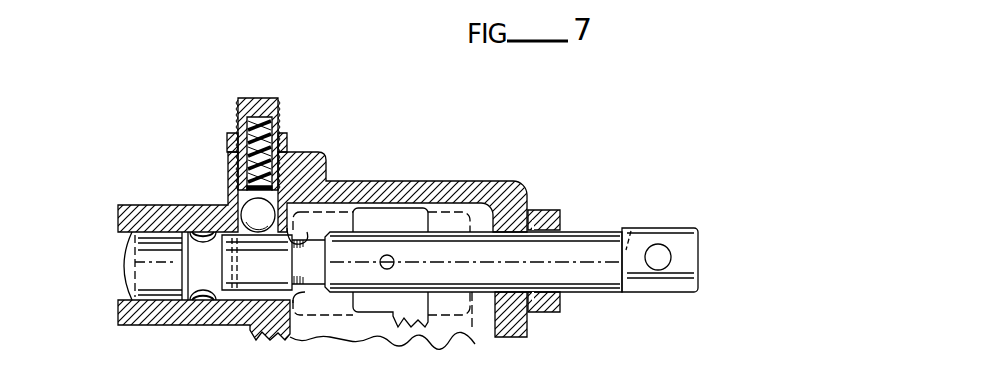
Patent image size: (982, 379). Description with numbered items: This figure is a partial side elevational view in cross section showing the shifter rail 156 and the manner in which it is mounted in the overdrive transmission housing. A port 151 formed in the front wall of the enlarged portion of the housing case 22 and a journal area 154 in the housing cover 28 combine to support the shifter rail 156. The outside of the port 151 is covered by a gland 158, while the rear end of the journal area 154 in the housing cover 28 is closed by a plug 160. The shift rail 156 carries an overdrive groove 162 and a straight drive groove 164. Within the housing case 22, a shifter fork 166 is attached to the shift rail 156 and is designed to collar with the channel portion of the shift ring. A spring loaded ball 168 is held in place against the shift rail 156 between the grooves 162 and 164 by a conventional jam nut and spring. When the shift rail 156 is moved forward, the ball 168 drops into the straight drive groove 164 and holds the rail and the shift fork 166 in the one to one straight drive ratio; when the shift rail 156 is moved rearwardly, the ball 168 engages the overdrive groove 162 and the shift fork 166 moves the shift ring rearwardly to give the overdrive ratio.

The housing case 22 is at (396, 182).
The housing cover 28 is at (291, 161).
The port 151 is at (517, 233).
The journal area 154 is at (158, 205).
The shifter rail 156 is at (612, 230).
The gland 158 is at (552, 210).
The plug 160 is at (123, 260).
The overdrive groove 162 is at (318, 243).
The straight drive groove 164 is at (200, 232).
The shifter fork 166 is at (430, 318).
The spring loaded ball 168 is at (252, 203).